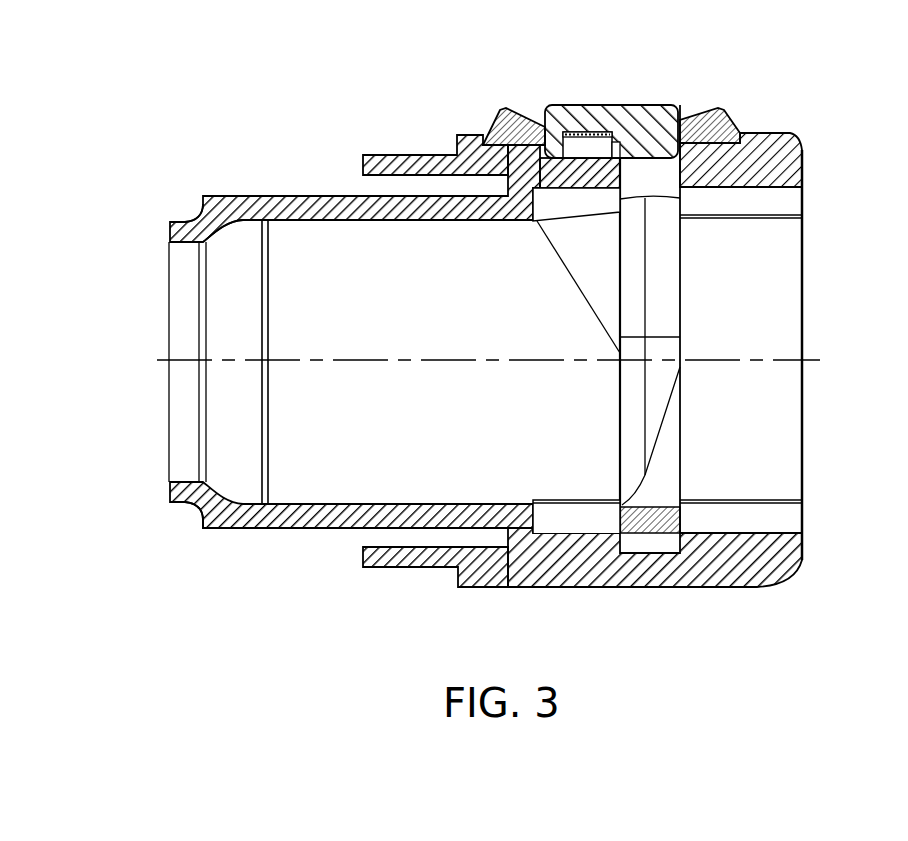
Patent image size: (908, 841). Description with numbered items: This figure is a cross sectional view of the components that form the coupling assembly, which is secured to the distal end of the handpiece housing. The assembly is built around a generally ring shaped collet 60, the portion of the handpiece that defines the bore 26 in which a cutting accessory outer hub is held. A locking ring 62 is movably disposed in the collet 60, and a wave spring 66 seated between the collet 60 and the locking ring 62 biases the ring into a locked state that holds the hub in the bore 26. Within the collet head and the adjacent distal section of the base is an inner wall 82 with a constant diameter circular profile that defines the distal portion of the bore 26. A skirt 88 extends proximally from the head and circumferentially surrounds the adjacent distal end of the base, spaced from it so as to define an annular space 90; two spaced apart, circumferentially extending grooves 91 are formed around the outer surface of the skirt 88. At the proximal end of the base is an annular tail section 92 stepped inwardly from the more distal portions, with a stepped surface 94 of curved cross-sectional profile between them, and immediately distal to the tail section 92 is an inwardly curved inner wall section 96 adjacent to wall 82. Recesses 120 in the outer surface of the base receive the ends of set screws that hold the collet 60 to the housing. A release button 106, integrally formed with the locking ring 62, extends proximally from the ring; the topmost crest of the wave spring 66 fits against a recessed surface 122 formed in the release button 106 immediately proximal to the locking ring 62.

The bore 26 is at (462, 465).
The collet 60 is at (263, 147).
The locking ring 62 is at (680, 278).
The wave spring 66 is at (581, 160).
The inner wall 82 is at (752, 444).
The skirt 88 is at (364, 155).
The annular space 90 is at (393, 565).
The grooves 91 is at (426, 155).
The annular tail section 92 is at (170, 240).
The stepped surface 94 is at (197, 216).
The inner wall section 96 is at (224, 232).
The release button 106 is at (632, 105).
The recesses 120 is at (237, 528).
The recessed surface 122 is at (582, 131).